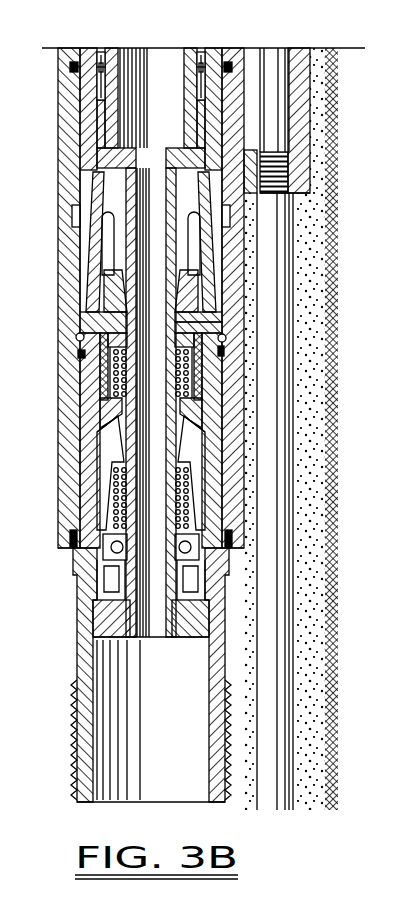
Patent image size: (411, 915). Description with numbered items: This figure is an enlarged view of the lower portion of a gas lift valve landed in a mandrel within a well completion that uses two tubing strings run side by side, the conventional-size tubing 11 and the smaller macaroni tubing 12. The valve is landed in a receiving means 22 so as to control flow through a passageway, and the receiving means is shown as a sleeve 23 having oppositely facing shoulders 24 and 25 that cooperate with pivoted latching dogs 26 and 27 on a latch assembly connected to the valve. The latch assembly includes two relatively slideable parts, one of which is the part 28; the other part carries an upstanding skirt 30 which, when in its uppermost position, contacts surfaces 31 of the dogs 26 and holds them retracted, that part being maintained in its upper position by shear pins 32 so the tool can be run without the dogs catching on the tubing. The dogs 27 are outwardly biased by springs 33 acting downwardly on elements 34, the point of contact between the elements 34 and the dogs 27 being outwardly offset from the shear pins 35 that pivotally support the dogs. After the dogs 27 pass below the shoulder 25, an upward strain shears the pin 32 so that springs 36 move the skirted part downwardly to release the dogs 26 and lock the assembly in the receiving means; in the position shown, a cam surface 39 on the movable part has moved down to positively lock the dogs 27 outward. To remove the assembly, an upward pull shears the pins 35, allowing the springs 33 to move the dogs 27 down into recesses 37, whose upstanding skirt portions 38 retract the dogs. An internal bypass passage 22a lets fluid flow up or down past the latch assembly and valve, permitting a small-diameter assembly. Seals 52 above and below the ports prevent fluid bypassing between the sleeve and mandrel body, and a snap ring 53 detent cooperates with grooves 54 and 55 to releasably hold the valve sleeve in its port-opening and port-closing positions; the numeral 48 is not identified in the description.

The tubing 11 is at (68, 115).
The tubing 12 is at (285, 520).
The receiving means 22 is at (100, 365).
The bypass passage 22a is at (140, 60).
The sleeve 23 is at (100, 243).
The shoulder 24 is at (82, 318).
The shoulder 25 is at (112, 380).
The latching dog 26 is at (93, 267).
The latching dog 27 is at (97, 428).
The slideable part 28 is at (205, 318).
The upstanding skirt 30 is at (213, 328).
The surface 31 is at (72, 283).
The shear pin 32 is at (107, 401).
The spring 33 is at (114, 487).
The element 34 is at (115, 507).
The shear pin 35 is at (108, 553).
The spring 36 is at (112, 352).
The recess 37 is at (113, 568).
The upstanding skirt portion 38 is at (100, 588).
The cam surface 39 is at (108, 442).
The shear pin 48 is at (97, 88).
The seal 52 is at (68, 67).
The snap ring 53 is at (76, 336).
The groove 54 is at (76, 212).
The groove 55 is at (226, 338).